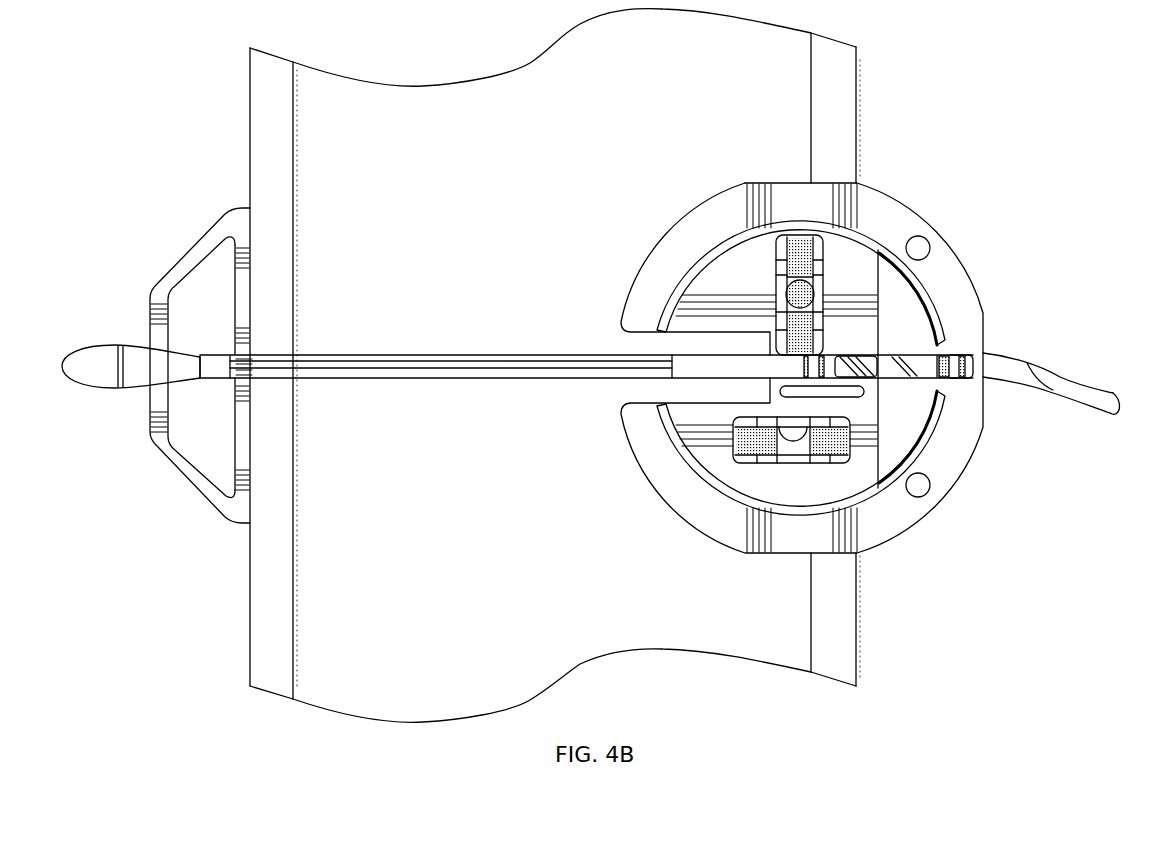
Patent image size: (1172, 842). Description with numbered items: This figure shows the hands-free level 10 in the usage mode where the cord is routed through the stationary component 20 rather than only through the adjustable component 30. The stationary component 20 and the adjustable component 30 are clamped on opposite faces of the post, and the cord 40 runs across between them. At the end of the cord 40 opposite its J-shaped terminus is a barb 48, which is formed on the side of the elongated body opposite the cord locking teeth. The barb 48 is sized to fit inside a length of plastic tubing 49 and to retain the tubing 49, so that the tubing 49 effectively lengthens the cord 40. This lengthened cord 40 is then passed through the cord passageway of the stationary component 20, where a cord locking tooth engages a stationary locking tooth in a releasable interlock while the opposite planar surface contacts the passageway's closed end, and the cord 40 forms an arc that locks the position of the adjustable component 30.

The hands-free level 10 is at (416, 428).
The stationary component 20 is at (953, 268).
The adjustable component 30 is at (210, 230).
The cord 40 is at (362, 353).
The barb 48 is at (803, 363).
The plastic tubing 49 is at (1058, 380).